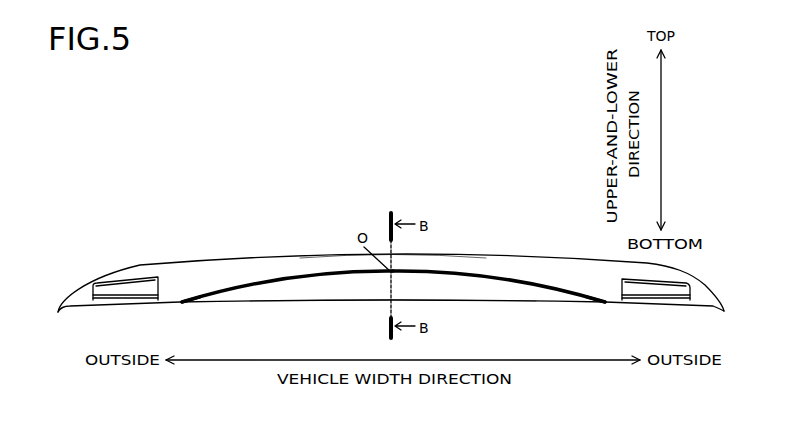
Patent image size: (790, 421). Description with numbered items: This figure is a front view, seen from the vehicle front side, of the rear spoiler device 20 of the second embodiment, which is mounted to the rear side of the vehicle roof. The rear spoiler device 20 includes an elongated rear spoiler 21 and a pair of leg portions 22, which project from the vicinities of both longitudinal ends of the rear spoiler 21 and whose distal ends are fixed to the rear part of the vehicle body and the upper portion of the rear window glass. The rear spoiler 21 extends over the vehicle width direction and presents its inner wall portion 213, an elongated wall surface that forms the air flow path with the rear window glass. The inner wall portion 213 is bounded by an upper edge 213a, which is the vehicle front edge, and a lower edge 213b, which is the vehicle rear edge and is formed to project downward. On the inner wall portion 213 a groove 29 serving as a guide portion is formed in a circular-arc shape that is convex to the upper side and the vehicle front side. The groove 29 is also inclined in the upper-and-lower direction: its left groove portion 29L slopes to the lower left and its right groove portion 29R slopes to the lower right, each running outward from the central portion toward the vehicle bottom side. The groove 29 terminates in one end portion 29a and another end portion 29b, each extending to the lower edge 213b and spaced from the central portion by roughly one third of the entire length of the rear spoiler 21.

The rear spoiler device 20 is at (249, 211).
The rear spoiler 21 is at (221, 254).
The leg portion 22 is at (127, 291).
The groove 29 is at (357, 290).
The left groove portion 29L is at (263, 280).
The right groove portion 29R is at (522, 280).
The one end portion 29a is at (183, 303).
The another end portion 29b is at (600, 303).
The inner wall portion 213 is at (468, 263).
The upper edge 213a is at (326, 257).
The lower edge 213b is at (308, 302).